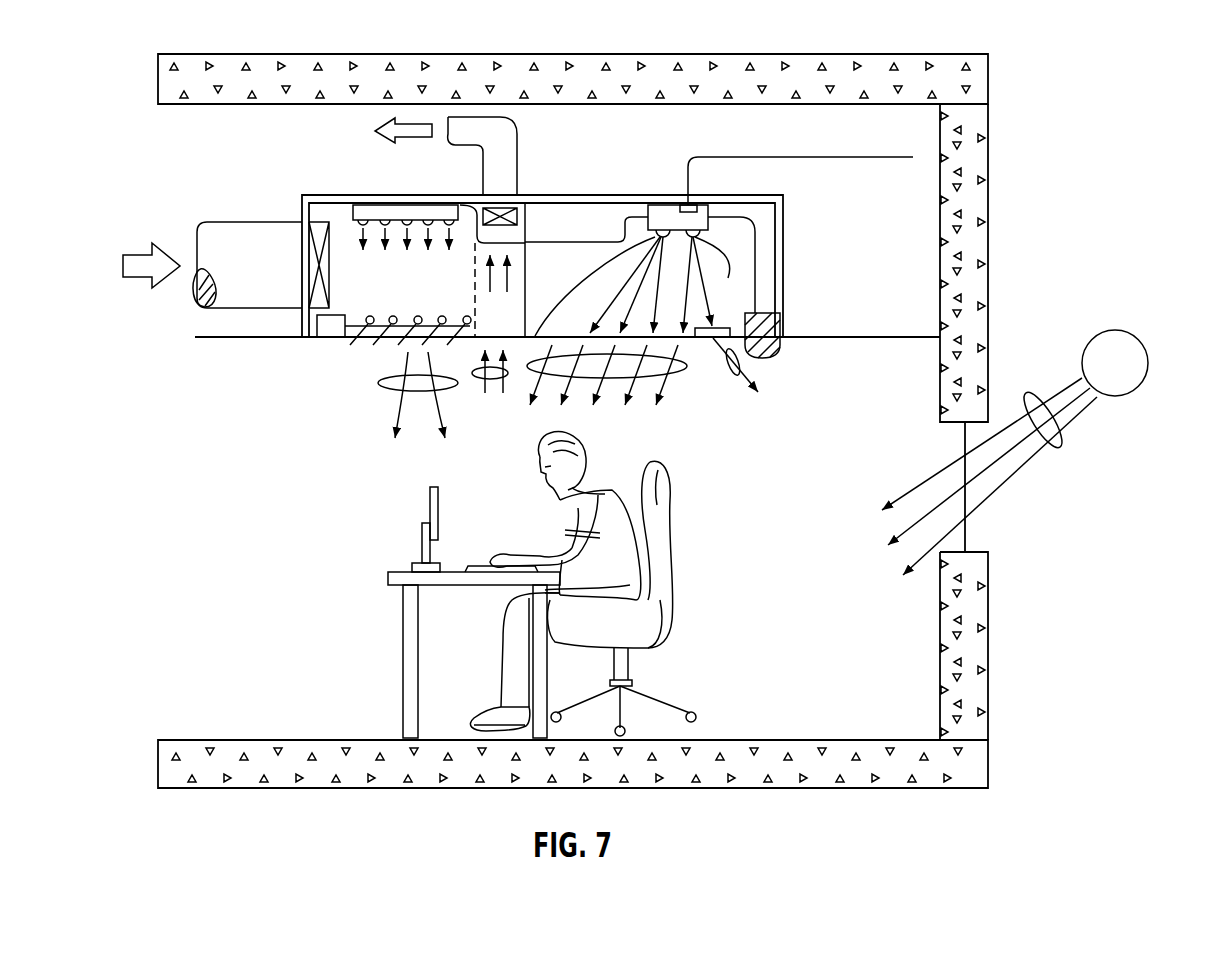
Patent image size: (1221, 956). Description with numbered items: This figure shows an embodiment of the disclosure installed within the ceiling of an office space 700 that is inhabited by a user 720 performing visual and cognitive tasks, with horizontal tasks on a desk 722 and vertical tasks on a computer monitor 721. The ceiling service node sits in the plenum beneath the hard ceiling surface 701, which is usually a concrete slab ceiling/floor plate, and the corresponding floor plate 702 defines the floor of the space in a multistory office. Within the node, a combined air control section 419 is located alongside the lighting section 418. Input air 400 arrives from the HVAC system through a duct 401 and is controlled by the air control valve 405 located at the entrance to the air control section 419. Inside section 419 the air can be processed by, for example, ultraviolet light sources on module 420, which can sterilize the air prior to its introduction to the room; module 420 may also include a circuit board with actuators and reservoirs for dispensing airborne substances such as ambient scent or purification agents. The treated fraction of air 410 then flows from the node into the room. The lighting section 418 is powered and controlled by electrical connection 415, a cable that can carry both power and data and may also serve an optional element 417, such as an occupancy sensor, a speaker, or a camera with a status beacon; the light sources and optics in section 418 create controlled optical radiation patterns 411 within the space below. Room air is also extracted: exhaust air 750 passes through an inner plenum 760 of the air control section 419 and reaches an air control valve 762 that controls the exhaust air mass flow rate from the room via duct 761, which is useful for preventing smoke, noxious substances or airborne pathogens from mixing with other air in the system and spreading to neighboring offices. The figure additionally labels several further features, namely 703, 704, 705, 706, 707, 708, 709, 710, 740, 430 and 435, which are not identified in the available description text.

The office space 700 is at (180, 42).
The hard ceiling surface 701 is at (255, 105).
The floor plate 702 is at (255, 738).
The wall 703 is at (940, 665).
The window 704 is at (965, 540).
The sun 705 is at (1130, 392).
The lens 706 is at (1063, 445).
The light emitter 707 is at (665, 207).
The conduit 708 is at (592, 241).
The fan 709 is at (330, 338).
The heating element 710 is at (397, 343).
The user 720 is at (535, 448).
The computer monitor 721 is at (427, 512).
The desk 722 is at (455, 568).
The detector 740 is at (722, 328).
The exhaust air 750 is at (490, 382).
The inner plenum 760 is at (522, 327).
The duct 761 is at (517, 145).
The air control valve 762 is at (487, 208).
The airflow 400 is at (150, 280).
The duct 401 is at (207, 222).
The air control valve 405 is at (302, 197).
The fraction of airflow 410 is at (395, 392).
The controlled optical radiation patterns 411 is at (688, 365).
The electrical connection 415 is at (790, 157).
The optional element 417 is at (783, 332).
The light emitting portion 418 is at (577, 276).
The air control section 419 is at (427, 296).
The multi-function element 420 is at (408, 205).
The reflected beam 430 is at (762, 368).
The detector signal 435 is at (790, 374).